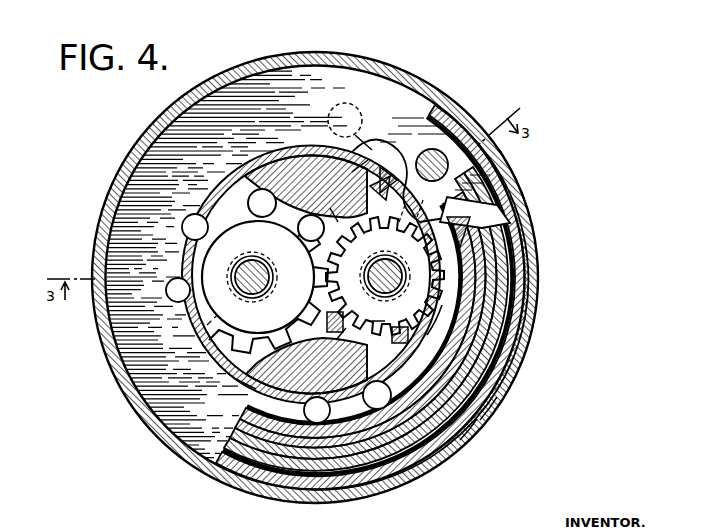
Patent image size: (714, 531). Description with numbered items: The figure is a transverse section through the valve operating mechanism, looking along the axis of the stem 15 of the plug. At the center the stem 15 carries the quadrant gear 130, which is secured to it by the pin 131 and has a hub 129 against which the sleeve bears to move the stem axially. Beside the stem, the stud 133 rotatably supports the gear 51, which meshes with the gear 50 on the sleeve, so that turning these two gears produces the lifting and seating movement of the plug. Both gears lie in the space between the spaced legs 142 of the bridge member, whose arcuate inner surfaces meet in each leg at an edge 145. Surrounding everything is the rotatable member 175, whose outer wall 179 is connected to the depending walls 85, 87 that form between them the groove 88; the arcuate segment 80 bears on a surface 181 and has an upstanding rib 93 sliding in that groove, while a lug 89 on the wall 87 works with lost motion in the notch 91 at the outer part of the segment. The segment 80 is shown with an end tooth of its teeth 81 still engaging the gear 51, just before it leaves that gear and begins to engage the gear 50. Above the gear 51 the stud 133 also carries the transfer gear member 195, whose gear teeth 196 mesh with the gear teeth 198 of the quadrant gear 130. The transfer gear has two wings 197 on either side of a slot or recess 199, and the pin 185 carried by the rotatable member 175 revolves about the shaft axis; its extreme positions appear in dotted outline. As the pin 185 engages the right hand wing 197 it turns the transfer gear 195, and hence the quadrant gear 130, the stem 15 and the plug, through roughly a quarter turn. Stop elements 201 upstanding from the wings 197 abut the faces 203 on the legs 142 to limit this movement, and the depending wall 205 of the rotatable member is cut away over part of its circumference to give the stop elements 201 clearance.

The stem 15 is at (248, 259).
The gear 50 is at (188, 226).
The gear 51 is at (456, 308).
The segment 80 is at (479, 421).
The teeth 81 is at (412, 366).
The depending wall 85 is at (255, 419).
The depending wall 87 is at (305, 478).
The groove 88 is at (384, 470).
The lug 89 is at (494, 396).
The notch 91 is at (506, 383).
The rib 93 is at (488, 344).
The hub 129 is at (192, 257).
The quadrant gear 130 is at (281, 293).
The pin 131 is at (259, 306).
The stud 133 is at (384, 255).
The legs 142 is at (306, 274).
The edge 145 is at (335, 279).
The rotatable member 175 is at (542, 204).
The outer wall 179 is at (140, 414).
The surface 181 is at (420, 262).
The pin 185 is at (329, 118).
The transfer gear member 195 is at (516, 325).
The gear teeth 196 is at (389, 314).
The wings 197 is at (369, 136).
The gear teeth 198 is at (240, 379).
The slot or recess 199 is at (432, 158).
The stop elements 201 is at (383, 171).
The faces 203 is at (367, 259).
The depending wall 205 is at (258, 174).